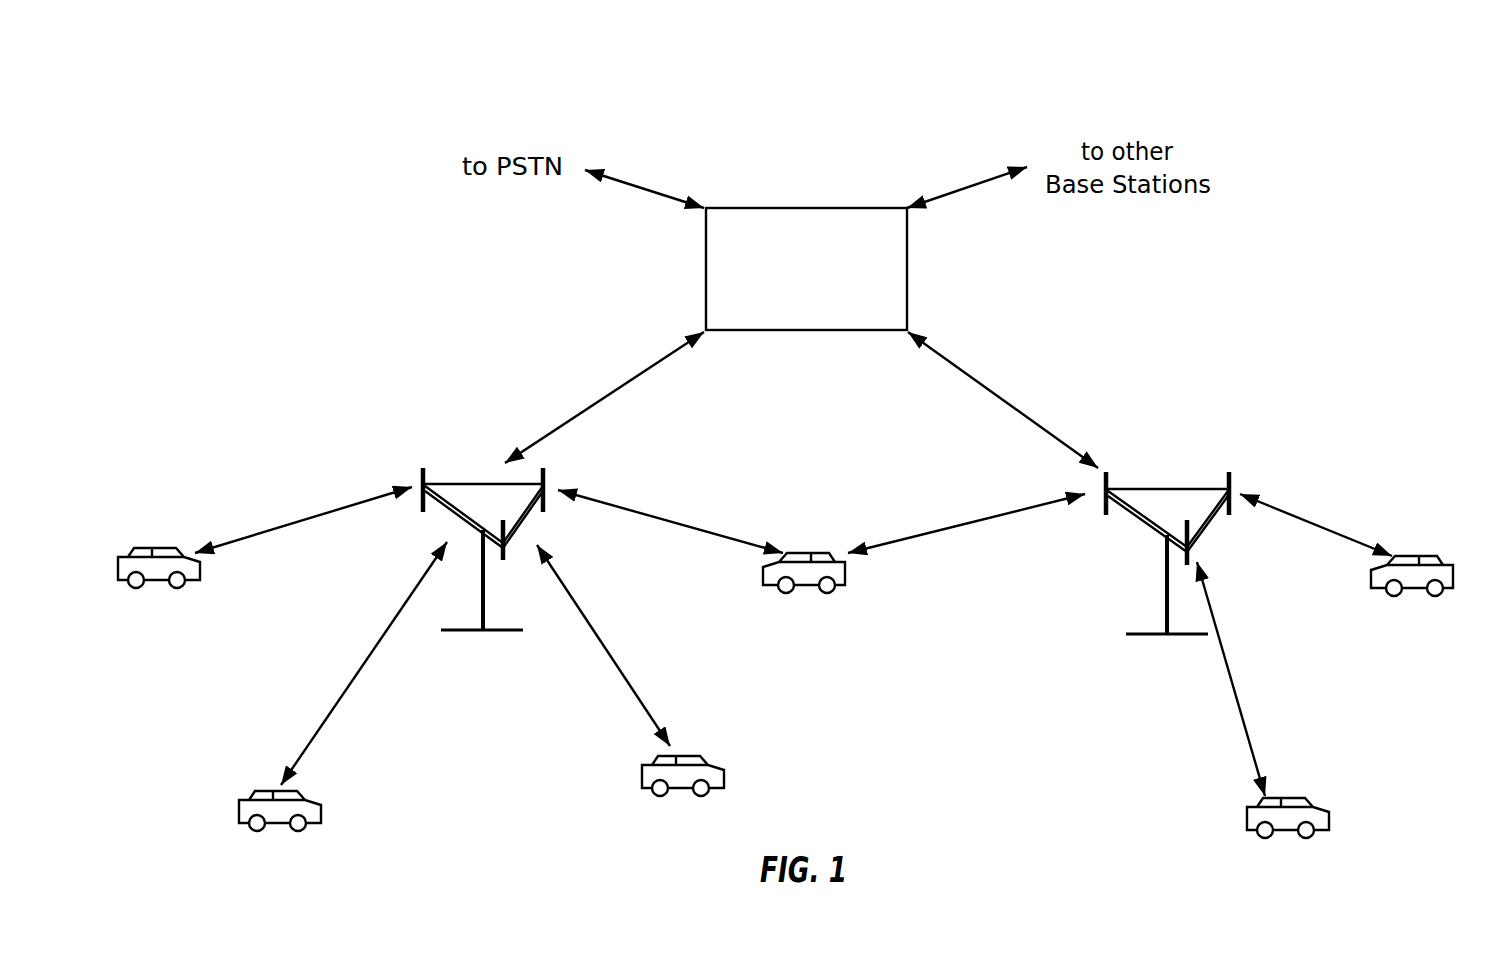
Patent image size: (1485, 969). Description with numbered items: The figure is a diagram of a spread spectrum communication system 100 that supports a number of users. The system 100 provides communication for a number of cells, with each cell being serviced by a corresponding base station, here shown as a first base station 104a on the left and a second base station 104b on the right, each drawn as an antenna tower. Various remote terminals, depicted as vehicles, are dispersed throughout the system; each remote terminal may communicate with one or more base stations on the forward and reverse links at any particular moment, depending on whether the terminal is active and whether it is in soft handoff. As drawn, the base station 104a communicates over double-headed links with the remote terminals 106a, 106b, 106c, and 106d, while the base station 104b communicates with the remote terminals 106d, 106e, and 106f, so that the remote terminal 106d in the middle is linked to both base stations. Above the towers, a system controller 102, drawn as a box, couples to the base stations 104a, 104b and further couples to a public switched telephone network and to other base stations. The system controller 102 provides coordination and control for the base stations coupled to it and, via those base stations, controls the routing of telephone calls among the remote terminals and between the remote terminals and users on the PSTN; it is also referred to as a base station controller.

The spread spectrum communication system 100 is at (1338, 106).
The system controller 102 is at (806, 207).
The base station 104a is at (472, 484).
The base station 104b is at (1184, 489).
The remote terminal 106a is at (145, 548).
The remote terminal 106b is at (260, 792).
The remote terminal 106c is at (684, 754).
The remote terminal 106d is at (805, 552).
The remote terminal 106e is at (1296, 797).
The remote terminal 106f is at (1420, 555).